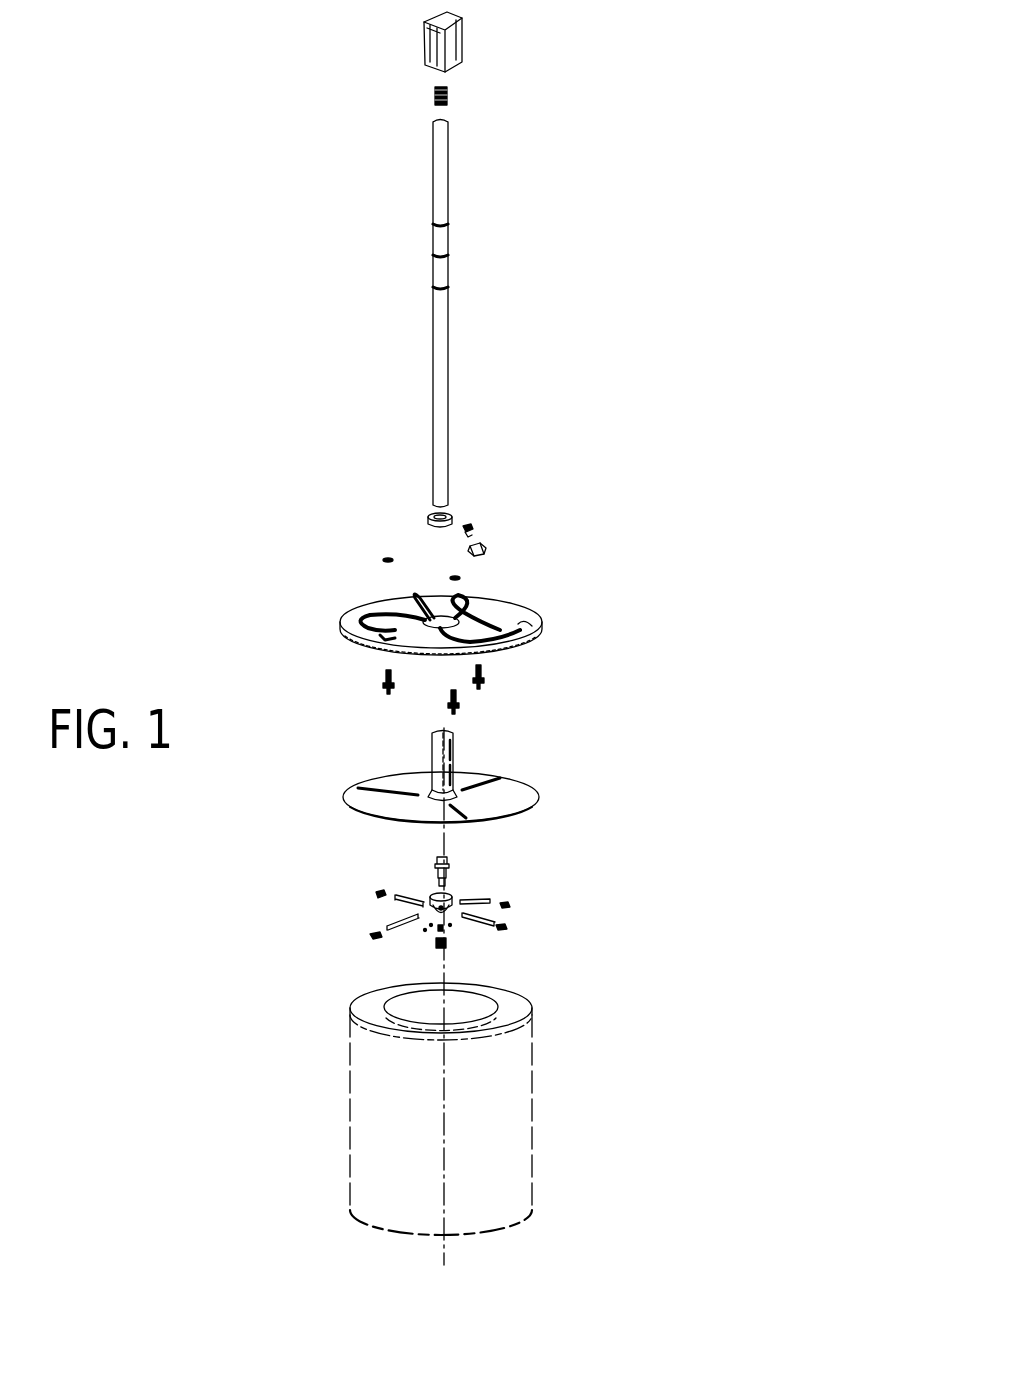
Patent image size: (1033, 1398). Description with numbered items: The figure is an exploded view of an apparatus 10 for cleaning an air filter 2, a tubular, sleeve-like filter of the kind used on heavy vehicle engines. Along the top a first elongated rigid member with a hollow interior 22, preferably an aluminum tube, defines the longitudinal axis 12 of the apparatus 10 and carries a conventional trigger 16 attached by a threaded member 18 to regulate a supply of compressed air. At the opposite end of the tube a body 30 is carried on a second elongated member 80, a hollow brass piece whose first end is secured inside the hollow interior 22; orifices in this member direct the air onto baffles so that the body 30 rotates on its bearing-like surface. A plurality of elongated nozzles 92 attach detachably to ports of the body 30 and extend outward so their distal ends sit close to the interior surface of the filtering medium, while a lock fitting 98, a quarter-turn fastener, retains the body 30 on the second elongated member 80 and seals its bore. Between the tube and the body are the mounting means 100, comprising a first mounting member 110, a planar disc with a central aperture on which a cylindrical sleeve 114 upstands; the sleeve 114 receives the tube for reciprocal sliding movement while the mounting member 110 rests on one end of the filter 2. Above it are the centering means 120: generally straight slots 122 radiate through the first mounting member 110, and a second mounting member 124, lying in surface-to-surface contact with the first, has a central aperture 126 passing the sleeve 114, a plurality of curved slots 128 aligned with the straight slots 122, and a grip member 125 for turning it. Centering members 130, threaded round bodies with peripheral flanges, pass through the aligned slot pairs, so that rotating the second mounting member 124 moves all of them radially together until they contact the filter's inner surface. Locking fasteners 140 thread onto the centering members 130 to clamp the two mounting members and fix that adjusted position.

The air filter 2 is at (365, 1048).
The apparatus 10 is at (628, 490).
The longitudinal axis 12 is at (444, 1257).
The trigger 16 is at (465, 40).
The threaded member 18 is at (450, 86).
The hollow interior 22 is at (448, 198).
The body 30 is at (458, 886).
The second elongated member 80 is at (418, 862).
The elongated nozzles 92 is at (410, 903).
The lock fitting 98 is at (446, 942).
The mounting means 100 is at (598, 740).
The first mounting member 110 is at (548, 800).
The cylindrical sleeve 114 is at (430, 735).
The centering means 120 is at (548, 585).
The generally straight slots 122 is at (382, 790).
The second mounting member 124 is at (365, 605).
The grip member 125 is at (525, 625).
The central aperture 126 is at (432, 610).
The curved slots 128 is at (370, 628).
The centering members 130 is at (500, 687).
The locking fasteners 140 is at (553, 522).